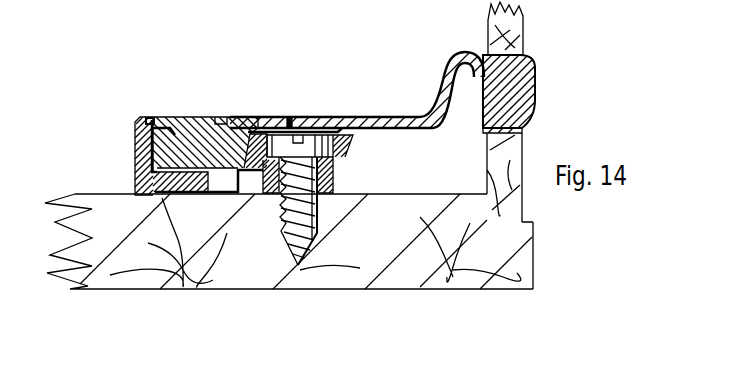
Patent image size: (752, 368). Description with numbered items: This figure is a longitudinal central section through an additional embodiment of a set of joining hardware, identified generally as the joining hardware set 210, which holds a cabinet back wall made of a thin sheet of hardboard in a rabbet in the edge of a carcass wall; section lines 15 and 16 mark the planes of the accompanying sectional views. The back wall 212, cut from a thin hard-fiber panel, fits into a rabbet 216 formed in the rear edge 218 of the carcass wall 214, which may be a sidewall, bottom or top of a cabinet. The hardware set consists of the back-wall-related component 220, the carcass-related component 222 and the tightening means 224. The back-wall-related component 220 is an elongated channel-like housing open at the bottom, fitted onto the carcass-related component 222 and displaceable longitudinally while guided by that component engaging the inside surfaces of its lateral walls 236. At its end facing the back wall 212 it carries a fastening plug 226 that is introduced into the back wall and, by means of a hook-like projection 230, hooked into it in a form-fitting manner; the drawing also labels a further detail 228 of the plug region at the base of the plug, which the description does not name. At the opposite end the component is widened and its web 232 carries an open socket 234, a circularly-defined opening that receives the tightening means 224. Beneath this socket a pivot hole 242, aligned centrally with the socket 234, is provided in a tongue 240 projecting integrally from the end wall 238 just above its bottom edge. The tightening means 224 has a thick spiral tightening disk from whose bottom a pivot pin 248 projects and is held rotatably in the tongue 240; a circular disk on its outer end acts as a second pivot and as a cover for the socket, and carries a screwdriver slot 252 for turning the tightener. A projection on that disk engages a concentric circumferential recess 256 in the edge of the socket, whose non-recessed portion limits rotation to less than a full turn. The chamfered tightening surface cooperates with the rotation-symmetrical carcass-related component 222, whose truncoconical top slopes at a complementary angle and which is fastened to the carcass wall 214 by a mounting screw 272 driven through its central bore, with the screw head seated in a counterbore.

The section line 15 is at (318, 67).
The section line 16 is at (317, 300).
The joining hardware set 210 is at (188, 98).
The back wall 212 is at (525, 28).
The carcass wall 214 is at (473, 290).
The rabbet 216 is at (526, 211).
The rear edge 218 is at (539, 276).
The back-wall-related component 220 is at (412, 117).
The carcass-related component 222 is at (338, 130).
The tightening means 224 is at (272, 117).
The fastening plug 226 is at (532, 95).
The pillar base 228 is at (530, 128).
The hook-like projection 230 is at (534, 52).
The web 232 is at (372, 122).
The socket 234 is at (135, 127).
The lateral walls 236 is at (419, 170).
The end wall 238 is at (135, 163).
The tongue 240 is at (165, 182).
The pivot hole 242 is at (212, 184).
The pivot pin 248 is at (228, 194).
The screwdriver slot 252 is at (221, 117).
The circumferential recess 256 is at (150, 117).
The mounting screw 272 is at (290, 270).